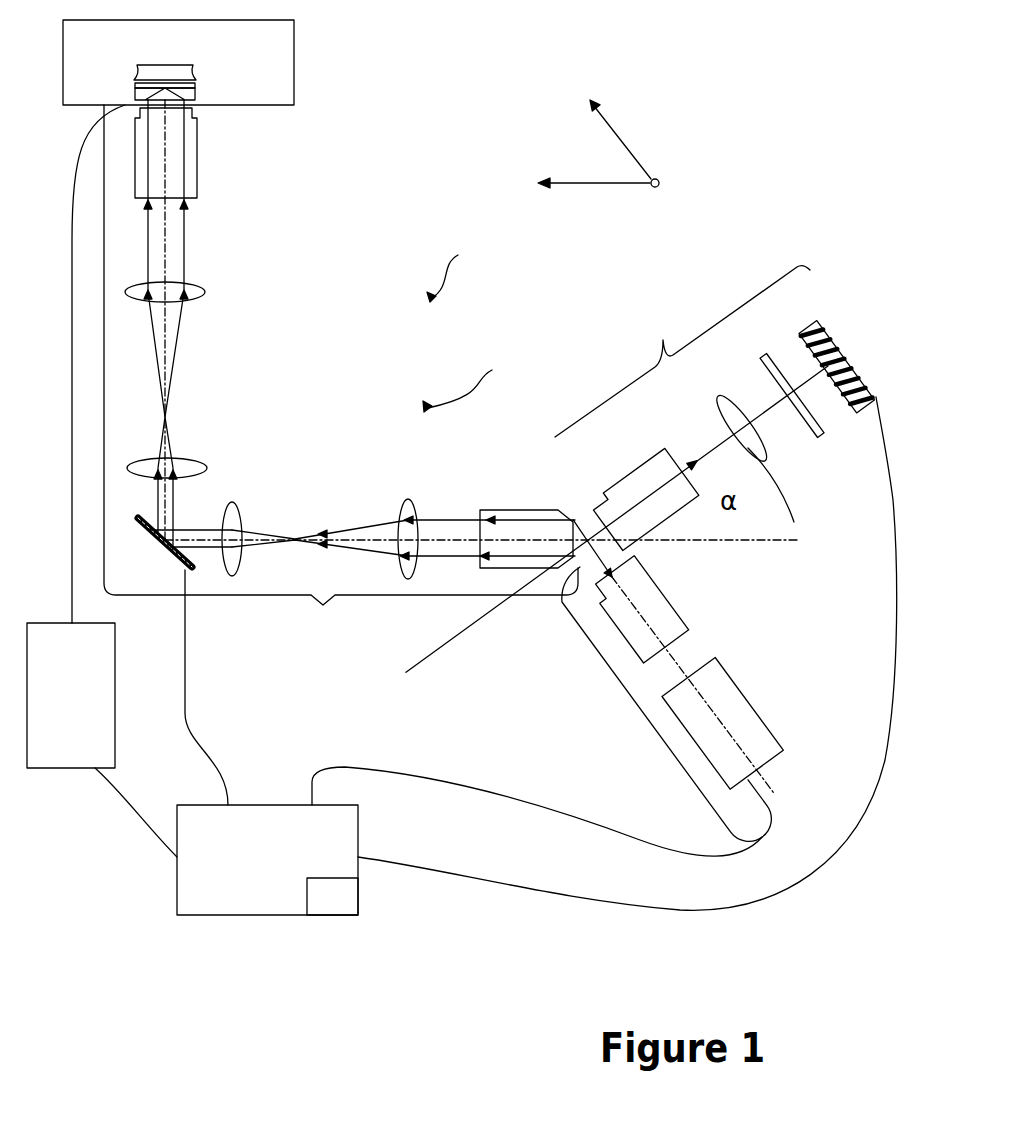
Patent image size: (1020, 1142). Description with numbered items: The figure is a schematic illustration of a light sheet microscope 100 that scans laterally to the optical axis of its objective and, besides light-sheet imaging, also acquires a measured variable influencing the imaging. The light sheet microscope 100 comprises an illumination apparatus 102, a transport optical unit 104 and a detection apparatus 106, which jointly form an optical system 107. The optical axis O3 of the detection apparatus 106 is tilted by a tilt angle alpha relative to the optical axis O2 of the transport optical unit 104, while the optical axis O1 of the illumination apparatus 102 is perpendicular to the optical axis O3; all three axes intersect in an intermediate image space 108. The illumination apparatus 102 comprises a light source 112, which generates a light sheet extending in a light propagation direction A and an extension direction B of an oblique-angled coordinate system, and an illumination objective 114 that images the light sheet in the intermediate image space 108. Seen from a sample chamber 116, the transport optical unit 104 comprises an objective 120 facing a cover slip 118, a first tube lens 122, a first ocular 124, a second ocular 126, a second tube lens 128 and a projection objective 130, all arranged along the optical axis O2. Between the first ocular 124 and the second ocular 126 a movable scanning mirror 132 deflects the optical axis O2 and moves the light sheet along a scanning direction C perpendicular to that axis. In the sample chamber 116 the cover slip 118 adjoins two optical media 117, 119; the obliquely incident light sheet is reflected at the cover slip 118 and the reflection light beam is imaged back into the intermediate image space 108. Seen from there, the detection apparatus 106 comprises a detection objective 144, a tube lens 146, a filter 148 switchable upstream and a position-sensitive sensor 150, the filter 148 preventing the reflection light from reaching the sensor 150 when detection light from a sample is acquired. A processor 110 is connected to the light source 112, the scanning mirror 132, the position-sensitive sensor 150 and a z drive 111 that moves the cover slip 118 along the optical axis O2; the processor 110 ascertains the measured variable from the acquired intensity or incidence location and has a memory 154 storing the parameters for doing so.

The light sheet microscope 100 is at (452, 263).
The illumination apparatus 102 is at (650, 752).
The transport optical unit 104 is at (341, 378).
The detection apparatus 106 is at (682, 351).
The optical system 107 is at (468, 376).
The intermediate image space 108 is at (588, 524).
The processor 110 is at (280, 873).
The z drive 111 is at (95, 711).
The light source 112 is at (772, 690).
The illumination objective 114 is at (687, 607).
The sample chamber 116 is at (294, 42).
The optical medium 117 is at (186, 70).
The cover slip 118 is at (197, 84).
The optical medium 119 is at (197, 97).
The objective 120 is at (197, 160).
The first tube lens 122 is at (205, 292).
The first ocular 124 is at (218, 452).
The second ocular 126 is at (232, 503).
The second tube lens 128 is at (410, 489).
The projection objective 130 is at (540, 510).
The scanning mirror 132 is at (160, 562).
The detection objective 144 is at (655, 462).
The tube lens 146 is at (720, 398).
The filter switchable upstream 148 is at (763, 353).
The position-sensitive sensor 150 is at (812, 327).
The memory 154 is at (353, 909).
The optical axis of the illumination apparatus O1 is at (772, 796).
The optical axis of the transport optical unit O2 is at (792, 540).
The optical axis of the detection apparatus O3 is at (443, 650).
The light propagation direction A is at (614, 123).
The extension direction B is at (665, 185).
The scanning direction C is at (581, 185).